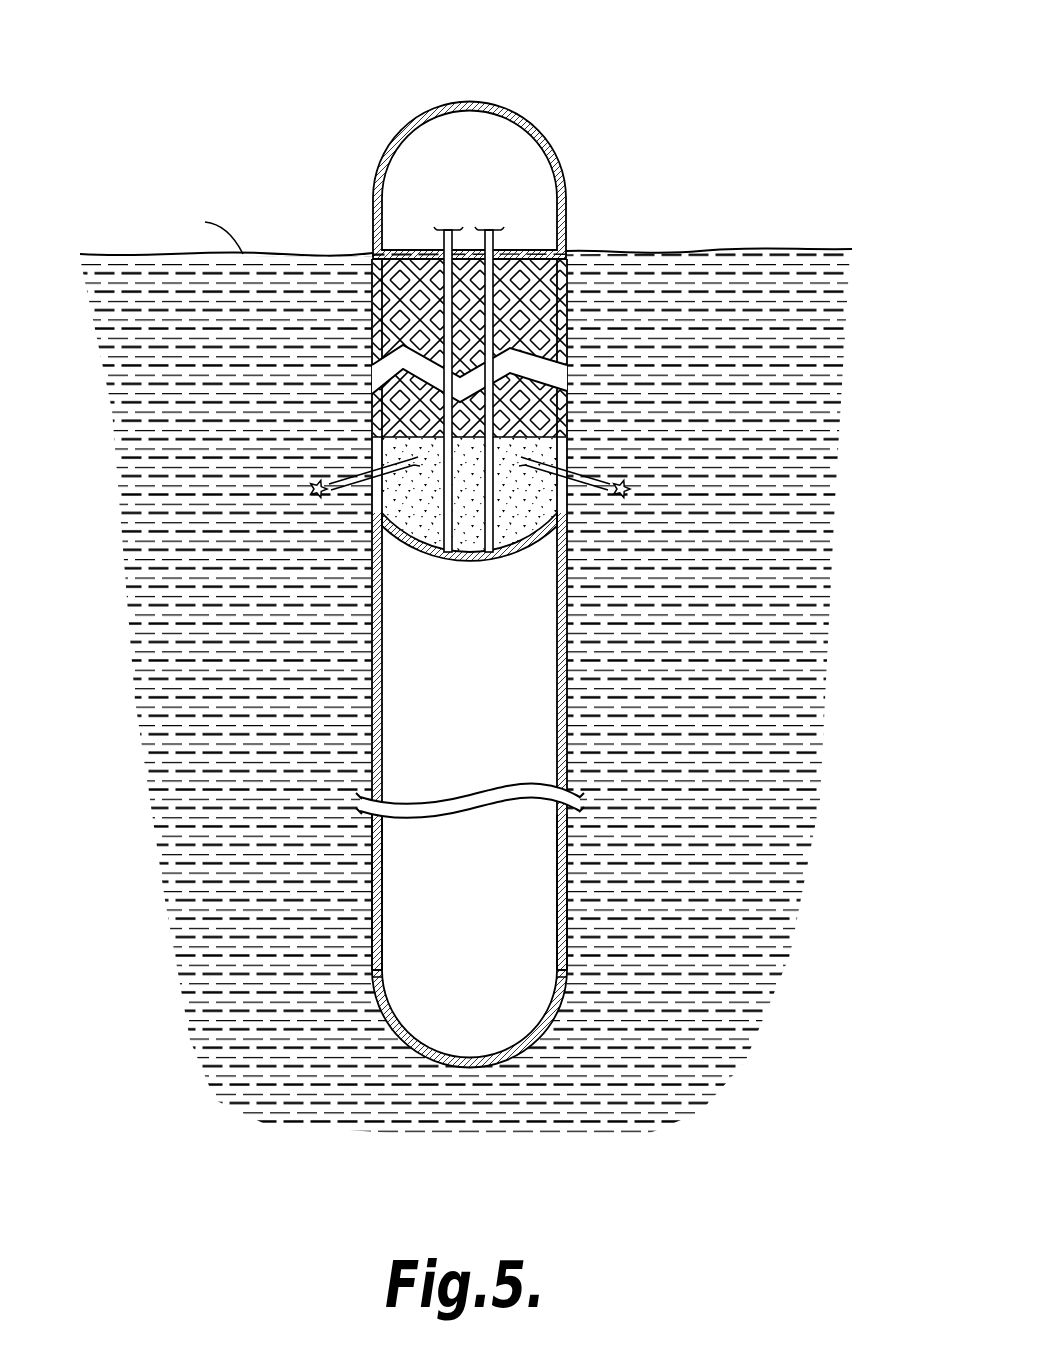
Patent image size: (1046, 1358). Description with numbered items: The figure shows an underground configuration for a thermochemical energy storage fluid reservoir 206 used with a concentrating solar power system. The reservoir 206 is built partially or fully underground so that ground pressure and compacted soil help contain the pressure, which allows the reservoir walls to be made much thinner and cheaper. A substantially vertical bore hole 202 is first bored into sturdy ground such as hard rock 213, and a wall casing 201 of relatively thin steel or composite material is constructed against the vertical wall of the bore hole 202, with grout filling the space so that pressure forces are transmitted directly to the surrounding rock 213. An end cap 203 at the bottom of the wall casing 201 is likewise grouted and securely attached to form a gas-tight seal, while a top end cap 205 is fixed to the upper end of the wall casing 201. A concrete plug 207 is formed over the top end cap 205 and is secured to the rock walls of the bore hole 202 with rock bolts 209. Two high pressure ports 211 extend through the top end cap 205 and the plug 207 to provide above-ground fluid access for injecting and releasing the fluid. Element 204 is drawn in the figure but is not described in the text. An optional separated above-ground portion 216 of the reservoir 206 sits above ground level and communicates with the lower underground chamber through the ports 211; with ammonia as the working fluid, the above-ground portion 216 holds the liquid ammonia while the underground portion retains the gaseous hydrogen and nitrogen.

The wall casing 201 is at (315, 721).
The bore hole 202 is at (378, 920).
The end cap 203 is at (425, 1055).
The grout seal 204 is at (553, 297).
The top end cap 205 is at (560, 592).
The TCES fluid reservoir 206 is at (477, 592).
The concrete plug 207 is at (394, 458).
The rock bolts 209 is at (330, 483).
The high pressure ports 211 is at (449, 297).
The hard rock 213 is at (808, 766).
The above-ground portion 216 is at (522, 148).